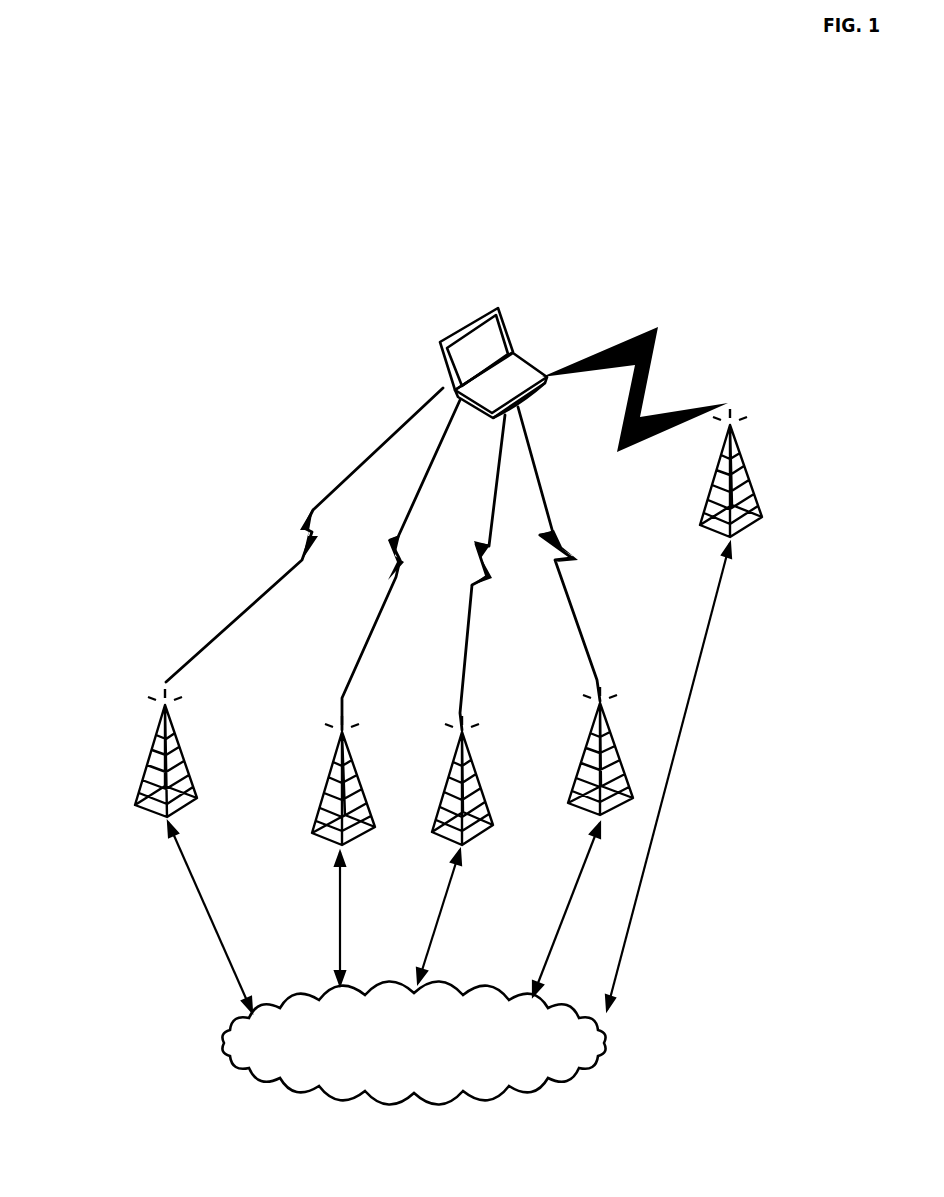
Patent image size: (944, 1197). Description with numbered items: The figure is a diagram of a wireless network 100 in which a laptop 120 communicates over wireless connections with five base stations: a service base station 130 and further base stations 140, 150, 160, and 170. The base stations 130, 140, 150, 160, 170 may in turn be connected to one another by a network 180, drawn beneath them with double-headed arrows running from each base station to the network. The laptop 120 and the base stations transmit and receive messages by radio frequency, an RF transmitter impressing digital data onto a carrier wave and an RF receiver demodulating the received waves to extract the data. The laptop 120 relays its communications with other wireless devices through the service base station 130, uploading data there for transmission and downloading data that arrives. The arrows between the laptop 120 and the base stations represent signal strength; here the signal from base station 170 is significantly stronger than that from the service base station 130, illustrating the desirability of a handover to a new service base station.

The wireless network 100 is at (543, 143).
The laptop 120 is at (525, 363).
The service base station 130 is at (182, 752).
The base station 140 is at (370, 788).
The base station 150 is at (475, 778).
The base station 160 is at (617, 752).
The base station 170 is at (745, 472).
The network 180 is at (415, 1101).